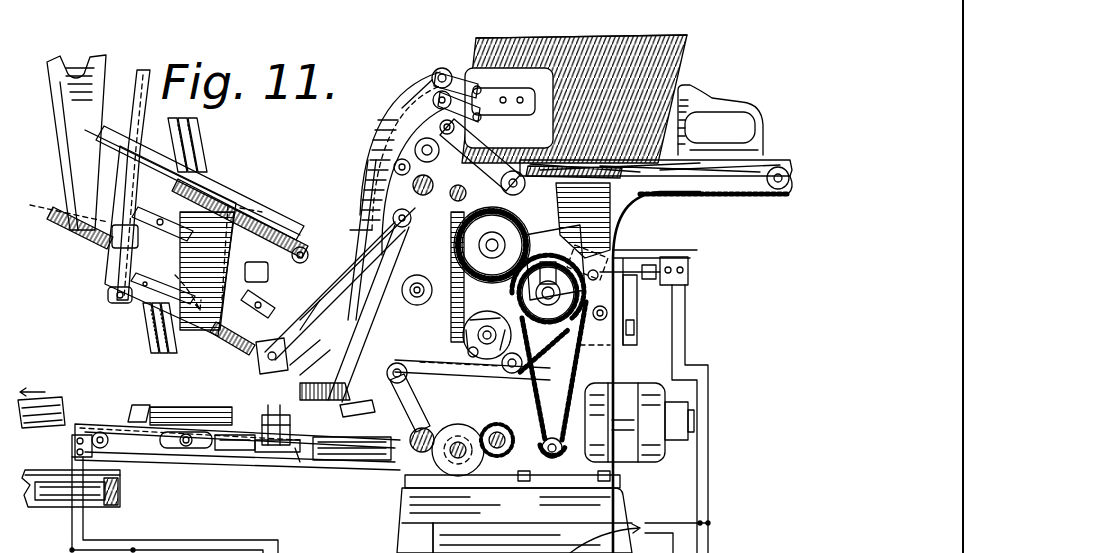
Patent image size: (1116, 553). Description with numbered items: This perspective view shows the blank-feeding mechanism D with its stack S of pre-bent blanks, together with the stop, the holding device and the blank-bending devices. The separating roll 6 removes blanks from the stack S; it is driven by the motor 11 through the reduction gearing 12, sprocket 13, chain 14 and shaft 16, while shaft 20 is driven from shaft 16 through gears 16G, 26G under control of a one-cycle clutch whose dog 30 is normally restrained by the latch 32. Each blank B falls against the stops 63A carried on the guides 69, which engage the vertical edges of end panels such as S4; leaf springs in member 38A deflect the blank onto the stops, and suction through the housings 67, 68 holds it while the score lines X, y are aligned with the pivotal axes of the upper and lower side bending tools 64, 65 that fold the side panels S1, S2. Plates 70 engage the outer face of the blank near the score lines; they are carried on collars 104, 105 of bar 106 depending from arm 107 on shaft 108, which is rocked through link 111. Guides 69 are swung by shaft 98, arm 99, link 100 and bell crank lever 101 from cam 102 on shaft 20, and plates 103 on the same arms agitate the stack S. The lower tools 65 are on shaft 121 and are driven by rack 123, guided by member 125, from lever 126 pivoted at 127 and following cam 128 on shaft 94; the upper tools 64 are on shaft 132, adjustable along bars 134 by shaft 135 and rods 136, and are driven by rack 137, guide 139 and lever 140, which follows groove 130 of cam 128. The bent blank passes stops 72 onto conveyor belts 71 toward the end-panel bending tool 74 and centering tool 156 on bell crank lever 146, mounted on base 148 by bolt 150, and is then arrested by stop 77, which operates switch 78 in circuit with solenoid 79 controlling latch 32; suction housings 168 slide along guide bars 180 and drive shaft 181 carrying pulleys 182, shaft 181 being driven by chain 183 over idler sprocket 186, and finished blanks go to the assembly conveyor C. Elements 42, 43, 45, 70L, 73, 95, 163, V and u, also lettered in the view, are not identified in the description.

The blank-separating roll 6 is at (420, 140).
The motor 11 is at (655, 455).
The reduction gearing 12 is at (595, 358).
The sprocket 13 is at (545, 470).
The chain 14 is at (599, 422).
The shaft 16 is at (588, 257).
The gear 16G is at (647, 310).
The shaft 20 is at (505, 240).
The gear 26G is at (519, 233).
The clutch pawl or dog 30 is at (583, 220).
The latch 32 is at (625, 300).
The member 38A is at (205, 135).
The bracket 42 is at (690, 95).
The rail 43 is at (692, 200).
The sprocket 45 is at (778, 196).
The stop 63A is at (95, 240).
The upper side bending plates 64 is at (62, 130).
The lower side bending plates 65 is at (100, 265).
The suction housing 67 is at (276, 276).
The suction housing 68 is at (270, 312).
The guides 69 is at (310, 357).
The plates 70 is at (400, 239).
The guide bar 70L is at (200, 185).
The conveyor belts 71 is at (400, 465).
The stop 72 is at (271, 418).
The block 73 is at (259, 361).
The bending tool 74 is at (302, 465).
The stop 77 is at (100, 430).
The switch 78 is at (72, 445).
The solenoid 79 is at (690, 270).
The shaft 94 is at (539, 283).
The gear 95 is at (547, 293).
The shaft 98 is at (455, 75).
The arm 99 is at (503, 102).
The link 100 is at (480, 120).
The bell crank lever 101 is at (495, 170).
The cam 102 is at (559, 252).
The plates 103 is at (492, 45).
The collar 104 is at (140, 290).
The collar 105 is at (134, 240).
The bar 106 is at (108, 296).
The arm 107 is at (133, 68).
The shaft 108 is at (436, 70).
The link 111 is at (478, 90).
The shaft 121 is at (389, 397).
The rack 123 is at (450, 300).
The guide member 125 is at (345, 408).
The lever 126 is at (516, 371).
The pivot 127 is at (490, 368).
The cam 128 is at (560, 371).
The cam groove 130 is at (548, 347).
The shaft 132 is at (350, 268).
The bars 134 is at (444, 361).
The shaft 135 is at (530, 180).
The rods 136 is at (487, 321).
The rack 137 is at (352, 255).
The guide member 139 is at (380, 305).
The lever 140 is at (460, 371).
The bell crank lever 146 is at (275, 455).
The base 148 is at (208, 448).
The bolt 150 is at (182, 448).
The centering tool 156 is at (316, 379).
The lever 163 is at (360, 255).
The suction housing 168 is at (285, 455).
The guide bars 180 is at (380, 510).
The drive shaft 181 is at (417, 538).
The driving pulley 182 is at (455, 455).
The chain 183 is at (598, 325).
The idler sprocket 186 is at (553, 428).
The blank B is at (195, 410).
The conveyor C is at (100, 485).
The blank-feeding mechanism D is at (656, 372).
The stack S is at (685, 70).
The side panel S1 is at (236, 194).
The side panel S2 is at (220, 376).
The end panel S4 is at (176, 407).
The reference line V is at (69, 201).
The score line X is at (170, 241).
The reference u is at (251, 197).
The score line y is at (187, 280).